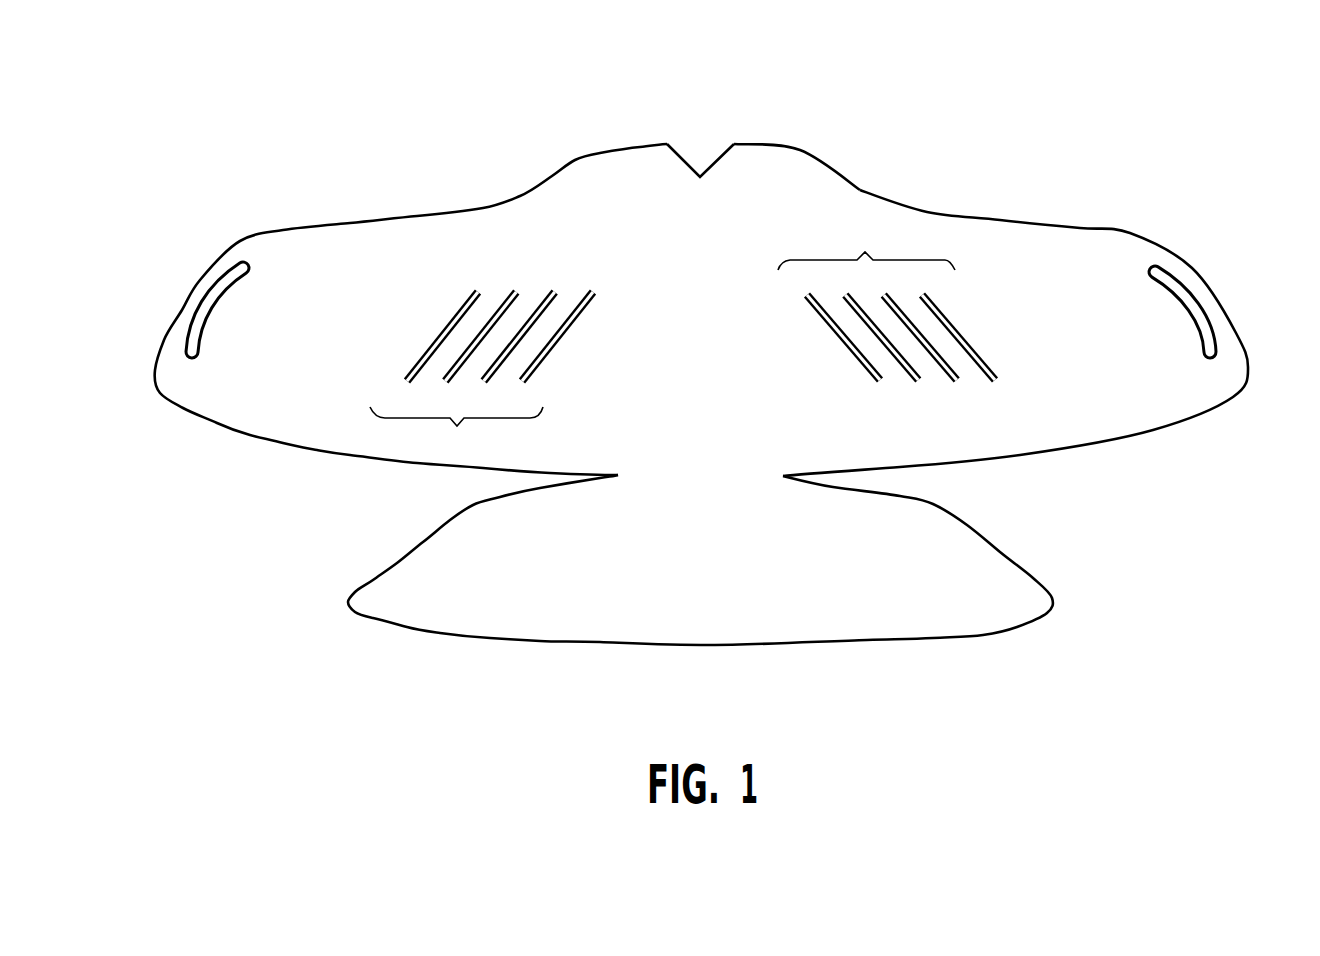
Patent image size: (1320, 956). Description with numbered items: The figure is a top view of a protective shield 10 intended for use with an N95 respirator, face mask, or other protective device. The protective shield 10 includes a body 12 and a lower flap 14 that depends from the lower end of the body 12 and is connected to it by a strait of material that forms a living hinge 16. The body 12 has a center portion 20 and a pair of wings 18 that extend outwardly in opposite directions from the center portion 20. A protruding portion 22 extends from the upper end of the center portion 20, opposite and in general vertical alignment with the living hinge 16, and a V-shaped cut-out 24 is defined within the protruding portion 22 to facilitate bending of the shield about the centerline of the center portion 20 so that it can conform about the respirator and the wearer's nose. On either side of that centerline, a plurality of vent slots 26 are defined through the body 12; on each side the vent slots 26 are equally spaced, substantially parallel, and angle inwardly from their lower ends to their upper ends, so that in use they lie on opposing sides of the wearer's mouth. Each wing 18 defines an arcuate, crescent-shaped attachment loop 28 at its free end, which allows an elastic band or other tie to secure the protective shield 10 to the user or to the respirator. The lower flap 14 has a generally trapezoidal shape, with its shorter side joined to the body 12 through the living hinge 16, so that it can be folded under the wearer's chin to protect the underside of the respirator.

The protective shield 10 is at (250, 108).
The body 12 is at (328, 467).
The lower flap 14 is at (300, 595).
The living hinge 16 is at (703, 467).
The wings 18 is at (383, 260).
The center portion 20 is at (673, 310).
The protruding portion 22 is at (750, 173).
The V-shaped cut-out 24 is at (700, 157).
The vent slots 26 is at (457, 426).
The attachment loop 28 is at (205, 308).